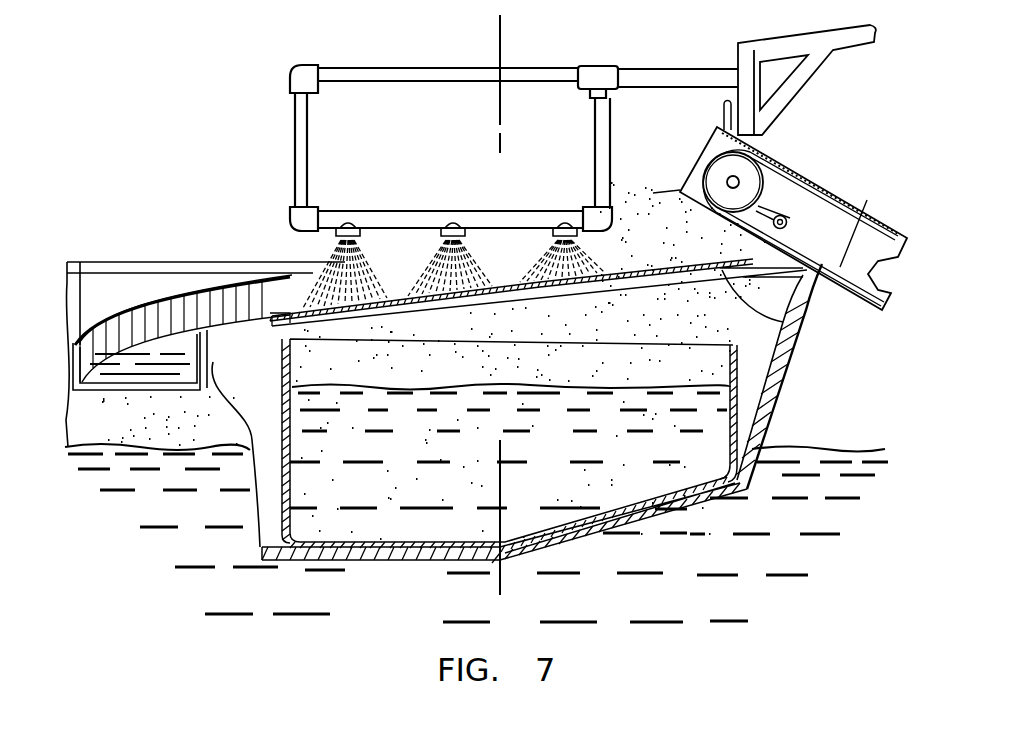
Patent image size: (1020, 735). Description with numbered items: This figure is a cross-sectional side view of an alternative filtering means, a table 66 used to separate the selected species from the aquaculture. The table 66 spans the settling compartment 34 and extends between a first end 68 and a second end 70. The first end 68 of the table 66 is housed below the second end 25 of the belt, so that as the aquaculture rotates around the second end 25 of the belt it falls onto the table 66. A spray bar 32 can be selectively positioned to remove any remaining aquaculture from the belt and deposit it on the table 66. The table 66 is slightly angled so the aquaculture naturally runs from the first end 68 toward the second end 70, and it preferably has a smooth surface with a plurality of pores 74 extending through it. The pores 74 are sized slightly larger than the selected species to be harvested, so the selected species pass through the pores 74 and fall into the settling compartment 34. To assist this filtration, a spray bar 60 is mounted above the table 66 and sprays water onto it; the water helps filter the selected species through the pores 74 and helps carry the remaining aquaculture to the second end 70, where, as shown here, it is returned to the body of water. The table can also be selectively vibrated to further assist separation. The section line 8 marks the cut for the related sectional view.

The section line 8- 8 is at (530, 15).
The second end 25 is at (735, 165).
The spray bar 32 is at (768, 215).
The settling compartment 34 is at (640, 513).
The spray bar 60 is at (390, 218).
The table 66 is at (800, 332).
The first end 68 is at (860, 202).
The second end 70 is at (157, 387).
The pores 74 is at (310, 310).